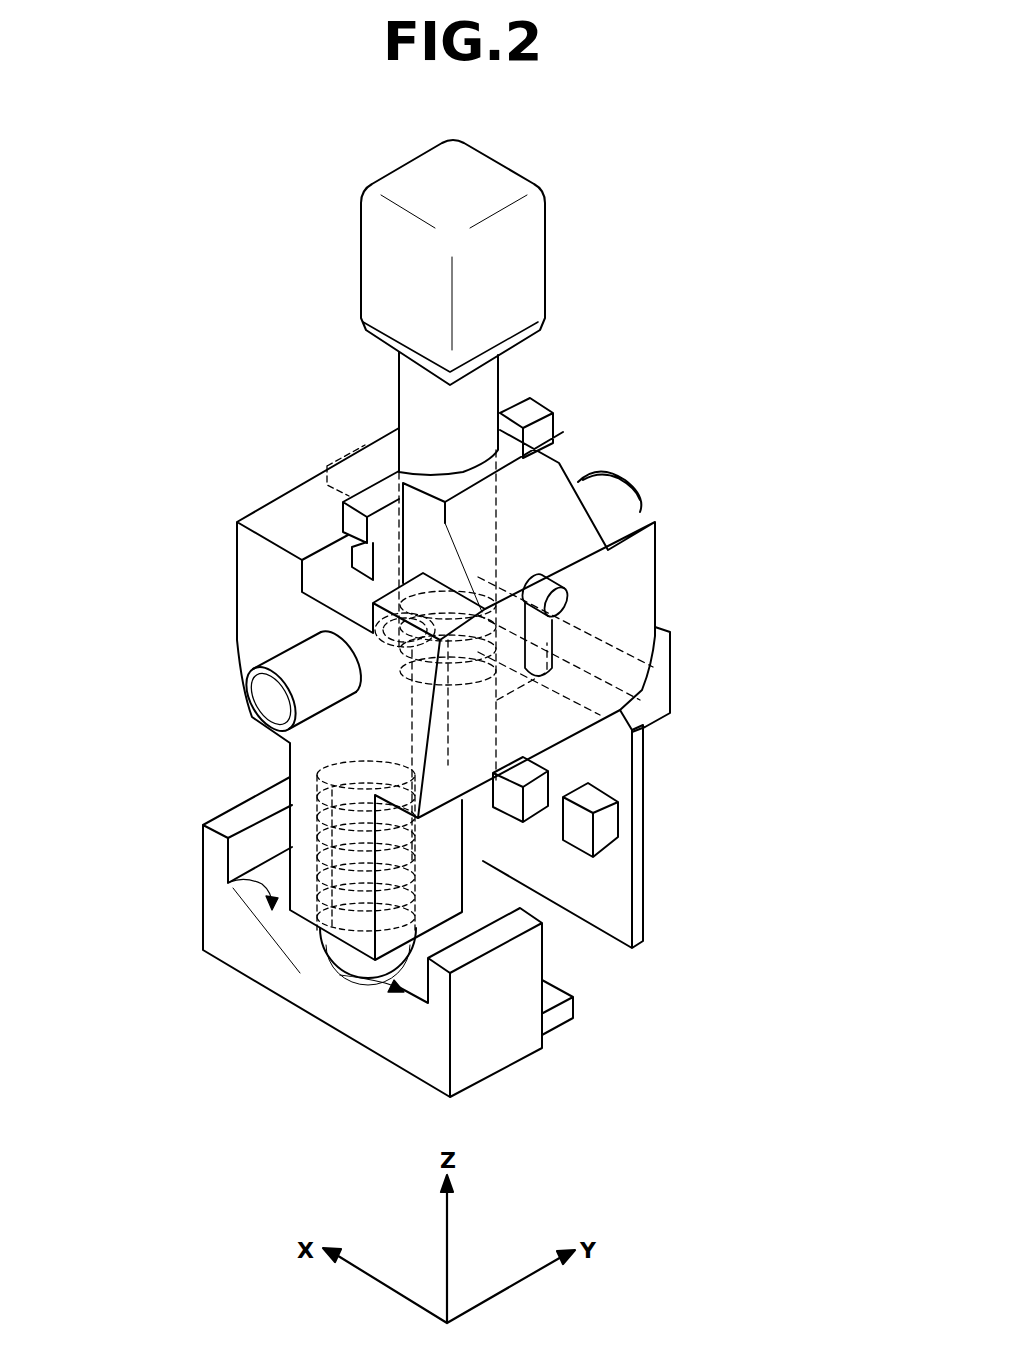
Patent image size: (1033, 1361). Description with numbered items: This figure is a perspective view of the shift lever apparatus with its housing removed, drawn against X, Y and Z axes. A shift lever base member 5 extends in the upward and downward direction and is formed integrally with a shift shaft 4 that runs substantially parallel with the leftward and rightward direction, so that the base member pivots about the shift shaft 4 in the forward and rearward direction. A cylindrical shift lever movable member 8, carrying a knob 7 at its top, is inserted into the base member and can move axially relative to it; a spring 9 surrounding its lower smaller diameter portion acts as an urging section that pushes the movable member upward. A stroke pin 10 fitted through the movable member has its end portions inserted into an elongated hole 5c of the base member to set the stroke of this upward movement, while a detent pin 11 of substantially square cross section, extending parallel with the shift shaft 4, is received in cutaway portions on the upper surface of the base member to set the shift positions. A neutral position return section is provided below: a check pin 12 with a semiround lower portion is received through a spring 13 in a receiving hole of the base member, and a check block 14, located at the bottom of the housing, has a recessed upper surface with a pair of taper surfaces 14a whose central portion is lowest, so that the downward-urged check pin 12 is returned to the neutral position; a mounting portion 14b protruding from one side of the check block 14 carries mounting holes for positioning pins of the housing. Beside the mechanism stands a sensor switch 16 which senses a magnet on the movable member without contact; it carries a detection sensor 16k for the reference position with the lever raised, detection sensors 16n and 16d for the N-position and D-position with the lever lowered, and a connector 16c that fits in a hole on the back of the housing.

The knob 7 is at (380, 246).
The shift lever movable member 8 is at (415, 405).
The shift lever base member 5 is at (555, 478).
The shift shaft 4 is at (625, 497).
The detent pin 11 is at (345, 520).
The stroke pin 10 is at (553, 612).
The elongated hole 5c is at (540, 650).
The spring 9 is at (405, 630).
The sensor switch 16 is at (641, 802).
The connector 16c is at (667, 682).
The detection sensor 16k is at (548, 771).
The detection sensor 16n is at (600, 810).
The detection sensor 16d is at (610, 837).
The spring 13 is at (335, 802).
The check pin 12 is at (345, 950).
The check block 14 is at (384, 969).
The taper surface 14a is at (235, 887).
The mounting portion 14b is at (565, 1010).